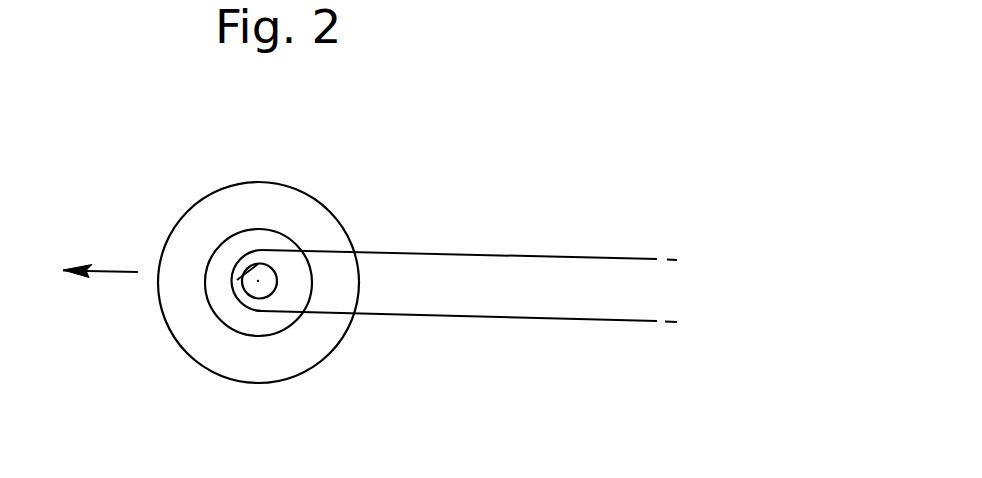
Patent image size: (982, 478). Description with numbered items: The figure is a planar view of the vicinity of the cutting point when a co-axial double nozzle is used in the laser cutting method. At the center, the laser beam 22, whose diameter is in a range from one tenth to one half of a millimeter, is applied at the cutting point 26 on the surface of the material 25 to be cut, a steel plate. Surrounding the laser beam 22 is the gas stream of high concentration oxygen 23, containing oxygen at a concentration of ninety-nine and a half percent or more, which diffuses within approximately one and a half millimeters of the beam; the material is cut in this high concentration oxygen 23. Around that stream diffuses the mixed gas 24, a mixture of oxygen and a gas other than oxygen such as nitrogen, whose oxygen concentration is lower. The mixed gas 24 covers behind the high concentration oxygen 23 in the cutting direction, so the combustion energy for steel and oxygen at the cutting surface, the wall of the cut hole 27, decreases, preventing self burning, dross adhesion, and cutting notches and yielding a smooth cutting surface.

The laser beam 22 is at (273, 290).
The high concentration oxygen gas 23 is at (245, 315).
The mixed gas 24 is at (180, 312).
The material to be cut 25 is at (433, 208).
The cutting point 26 is at (260, 264).
The cut hole 27 is at (518, 270).